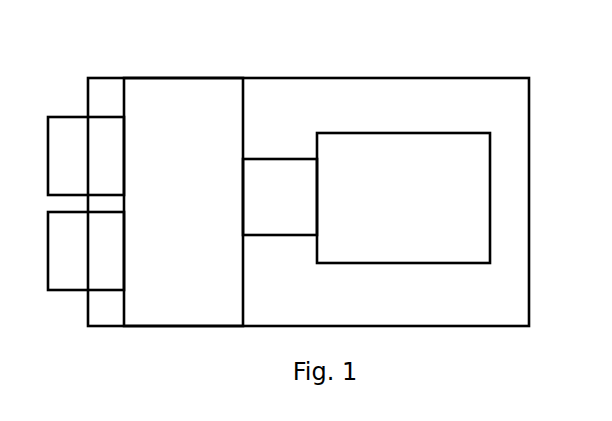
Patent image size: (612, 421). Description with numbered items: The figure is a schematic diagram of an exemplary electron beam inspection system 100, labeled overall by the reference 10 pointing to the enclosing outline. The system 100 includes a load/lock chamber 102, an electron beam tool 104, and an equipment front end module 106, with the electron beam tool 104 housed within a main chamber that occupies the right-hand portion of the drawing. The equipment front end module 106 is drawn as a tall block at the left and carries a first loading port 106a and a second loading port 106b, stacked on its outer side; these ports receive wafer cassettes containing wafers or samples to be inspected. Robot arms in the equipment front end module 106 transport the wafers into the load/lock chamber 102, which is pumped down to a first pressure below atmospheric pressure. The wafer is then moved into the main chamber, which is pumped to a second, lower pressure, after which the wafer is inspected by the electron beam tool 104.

The electronic device 10 is at (458, 77).
The electron beam inspection (EBI) system 100 is at (308, 202).
The load/lock chamber 102 is at (280, 197).
The electron beam tool 104 is at (403, 198).
The equipment front end module (EFEM) 106 is at (183, 202).
The first loading port 106a is at (86, 156).
The second loading port 106b is at (86, 251).